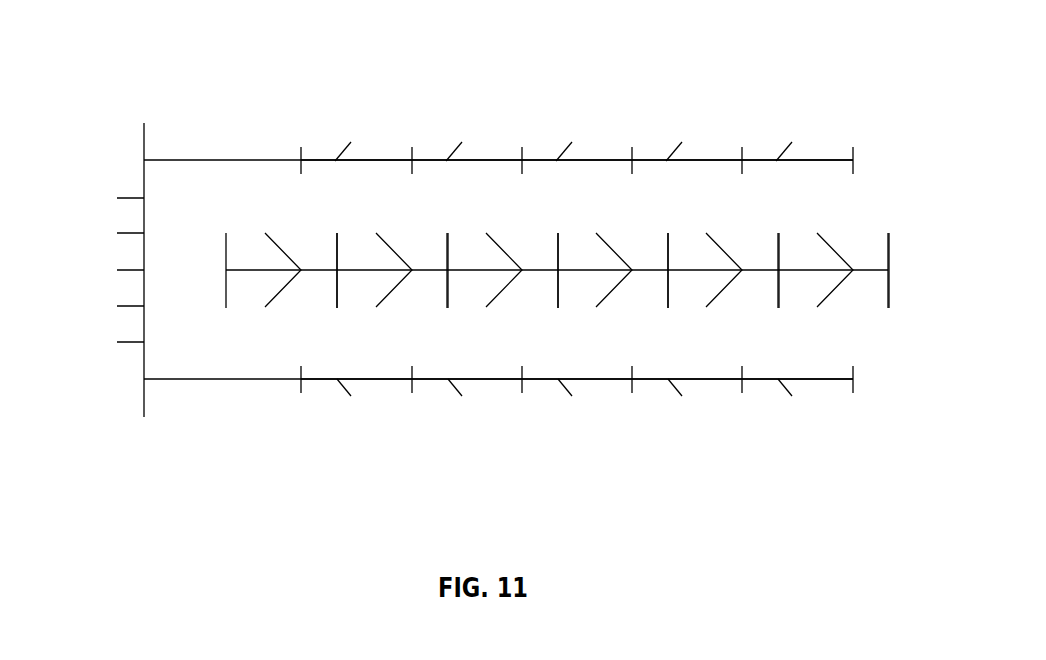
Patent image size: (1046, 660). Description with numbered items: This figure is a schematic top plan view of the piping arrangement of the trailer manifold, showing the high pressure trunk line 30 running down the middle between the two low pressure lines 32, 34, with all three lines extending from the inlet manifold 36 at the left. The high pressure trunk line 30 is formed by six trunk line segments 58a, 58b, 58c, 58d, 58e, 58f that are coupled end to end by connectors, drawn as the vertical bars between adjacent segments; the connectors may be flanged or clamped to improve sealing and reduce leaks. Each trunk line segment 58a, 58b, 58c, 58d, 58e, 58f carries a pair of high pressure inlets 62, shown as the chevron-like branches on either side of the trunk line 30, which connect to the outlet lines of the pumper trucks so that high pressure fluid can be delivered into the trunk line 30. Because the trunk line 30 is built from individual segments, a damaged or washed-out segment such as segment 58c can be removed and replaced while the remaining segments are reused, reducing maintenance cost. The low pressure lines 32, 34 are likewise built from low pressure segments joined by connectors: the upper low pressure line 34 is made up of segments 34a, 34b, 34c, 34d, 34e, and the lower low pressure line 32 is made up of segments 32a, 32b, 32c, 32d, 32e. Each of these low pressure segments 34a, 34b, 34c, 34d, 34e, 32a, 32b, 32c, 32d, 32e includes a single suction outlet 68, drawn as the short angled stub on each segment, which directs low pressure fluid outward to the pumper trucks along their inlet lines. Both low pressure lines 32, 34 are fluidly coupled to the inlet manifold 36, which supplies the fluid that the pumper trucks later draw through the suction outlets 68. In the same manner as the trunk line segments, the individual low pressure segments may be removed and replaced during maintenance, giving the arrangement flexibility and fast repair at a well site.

The high pressure trunk line 30 is at (892, 245).
The low pressure line 32 is at (740, 459).
The low pressure line 34 is at (625, 82).
The inlet manifold 36 is at (108, 262).
The high pressure inlet 62 is at (277, 242).
The suction outlet 68 is at (345, 150).
The trunk line segment 58a is at (888, 287).
The trunk line segment 58b is at (777, 287).
The trunk line segment 58c is at (667, 287).
The trunk line segment 58d is at (557, 287).
The trunk line segment 58e is at (447, 287).
The trunk line segment 58f is at (336, 287).
The low pressure segment 34a is at (831, 159).
The low pressure segment 34b is at (721, 159).
The low pressure segment 34c is at (611, 159).
The low pressure segment 34d is at (501, 159).
The low pressure segment 34e is at (390, 159).
The low pressure segment 32a is at (836, 381).
The low pressure segment 32b is at (726, 381).
The low pressure segment 32c is at (616, 381).
The low pressure segment 32d is at (506, 381).
The low pressure segment 32e is at (395, 381).